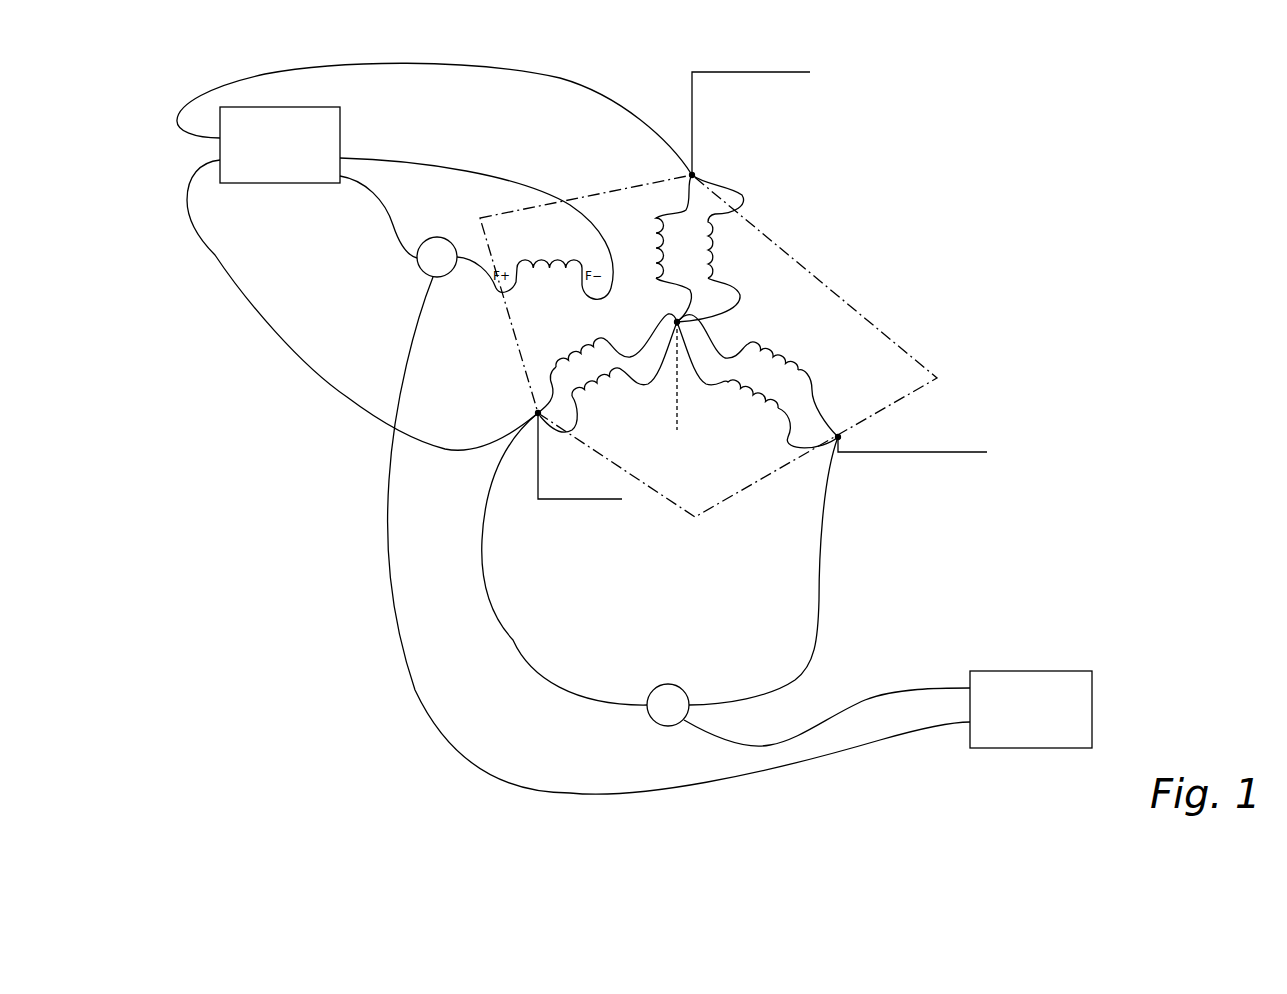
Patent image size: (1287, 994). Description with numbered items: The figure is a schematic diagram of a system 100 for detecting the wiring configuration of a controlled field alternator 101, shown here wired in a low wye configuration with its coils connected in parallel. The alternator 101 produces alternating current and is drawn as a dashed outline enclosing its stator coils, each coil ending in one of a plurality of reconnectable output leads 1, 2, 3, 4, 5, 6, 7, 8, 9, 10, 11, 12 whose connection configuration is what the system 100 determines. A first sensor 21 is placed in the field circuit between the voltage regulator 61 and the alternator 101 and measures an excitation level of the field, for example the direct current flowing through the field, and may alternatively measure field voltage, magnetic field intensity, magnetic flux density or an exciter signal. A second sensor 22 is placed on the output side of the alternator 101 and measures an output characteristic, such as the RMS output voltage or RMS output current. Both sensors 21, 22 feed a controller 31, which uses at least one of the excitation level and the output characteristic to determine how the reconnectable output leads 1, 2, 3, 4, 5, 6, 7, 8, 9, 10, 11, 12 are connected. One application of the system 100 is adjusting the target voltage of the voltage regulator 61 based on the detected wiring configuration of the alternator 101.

The system 100 is at (1032, 137).
The controlled field alternator 101 is at (816, 278).
The voltage regulator 61 is at (342, 121).
The controller 31 is at (1031, 670).
The first sensor 21 is at (438, 237).
The second sensor 22 is at (669, 684).
The reconnectable output lead 1 is at (717, 226).
The reconnectable output lead 7 is at (672, 226).
The reconnectable output lead 10 is at (671, 301).
The reconnectable output lead 4 is at (708, 300).
The reconnectable output lead 2 is at (543, 391).
The reconnectable output lead 5 is at (616, 340).
The reconnectable output lead 8 is at (558, 414).
The reconnectable output lead 11 is at (624, 359).
The reconnectable output lead 6 is at (737, 342).
The reconnectable output lead 3 is at (818, 403).
The reconnectable output lead 12 is at (727, 365).
The reconnectable output lead 9 is at (808, 428).